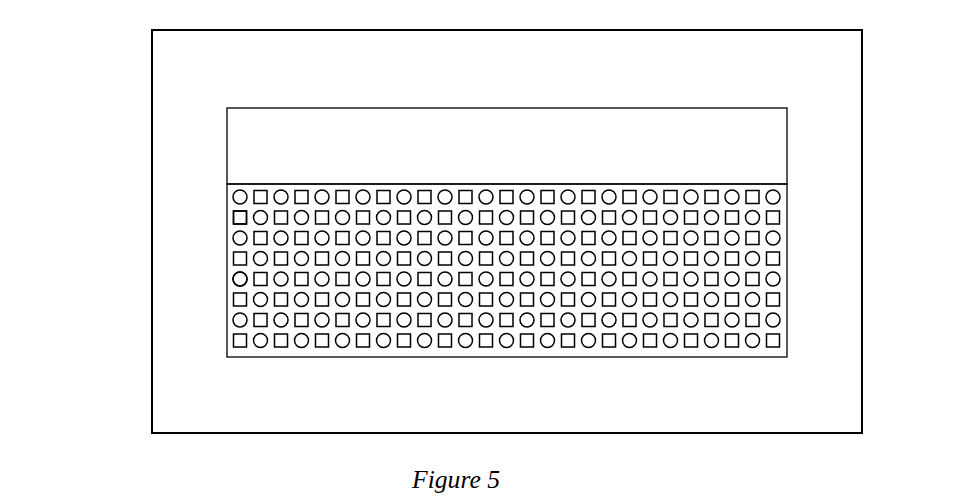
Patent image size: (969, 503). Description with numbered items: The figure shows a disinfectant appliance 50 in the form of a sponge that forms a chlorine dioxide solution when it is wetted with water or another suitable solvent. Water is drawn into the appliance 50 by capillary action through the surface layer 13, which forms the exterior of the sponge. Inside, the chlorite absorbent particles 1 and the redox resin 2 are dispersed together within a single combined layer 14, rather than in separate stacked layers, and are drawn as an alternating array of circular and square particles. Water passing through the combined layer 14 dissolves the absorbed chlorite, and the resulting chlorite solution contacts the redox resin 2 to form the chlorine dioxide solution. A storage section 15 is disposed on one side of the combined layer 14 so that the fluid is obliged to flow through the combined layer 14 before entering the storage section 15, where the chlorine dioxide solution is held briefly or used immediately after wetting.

The appliance 50 is at (100, 84).
The storage section 15 is at (227, 148).
The chlorite absorbent particles 1 is at (232, 218).
The redox resin 2 is at (232, 279).
The combined layer 14 is at (227, 331).
The surface layer 13 is at (185, 393).